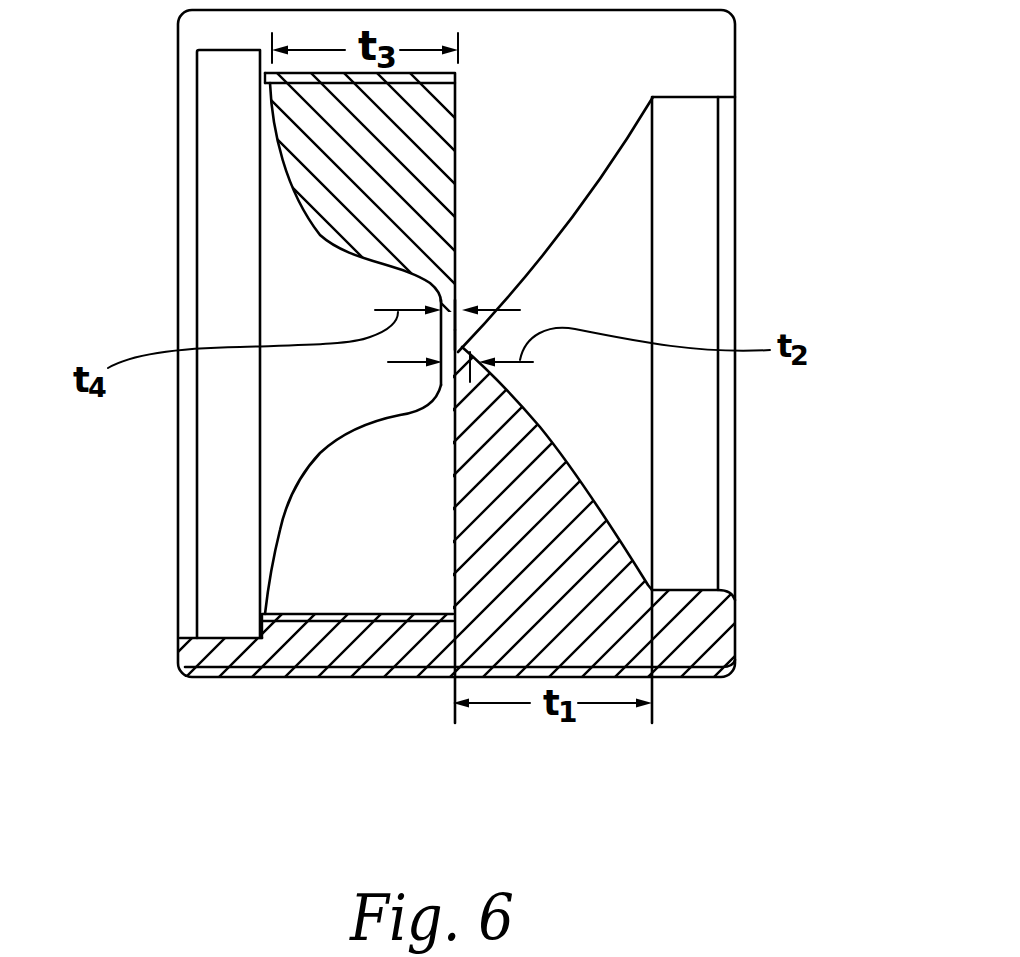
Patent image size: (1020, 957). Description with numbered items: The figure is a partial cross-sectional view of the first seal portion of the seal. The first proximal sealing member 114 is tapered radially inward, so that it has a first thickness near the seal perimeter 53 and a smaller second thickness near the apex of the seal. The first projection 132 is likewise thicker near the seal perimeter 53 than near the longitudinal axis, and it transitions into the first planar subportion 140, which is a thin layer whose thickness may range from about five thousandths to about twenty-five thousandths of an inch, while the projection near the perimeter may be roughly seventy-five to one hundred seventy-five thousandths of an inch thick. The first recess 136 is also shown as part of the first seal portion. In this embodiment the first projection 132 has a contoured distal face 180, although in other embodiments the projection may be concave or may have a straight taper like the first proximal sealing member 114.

The seal perimeter 53 is at (745, 638).
The first proximal sealing member 114 is at (583, 190).
The first projection 132 is at (312, 180).
The first recess 136 is at (338, 585).
The first planar subportion 140 is at (443, 340).
The contoured distal face 180 is at (297, 478).